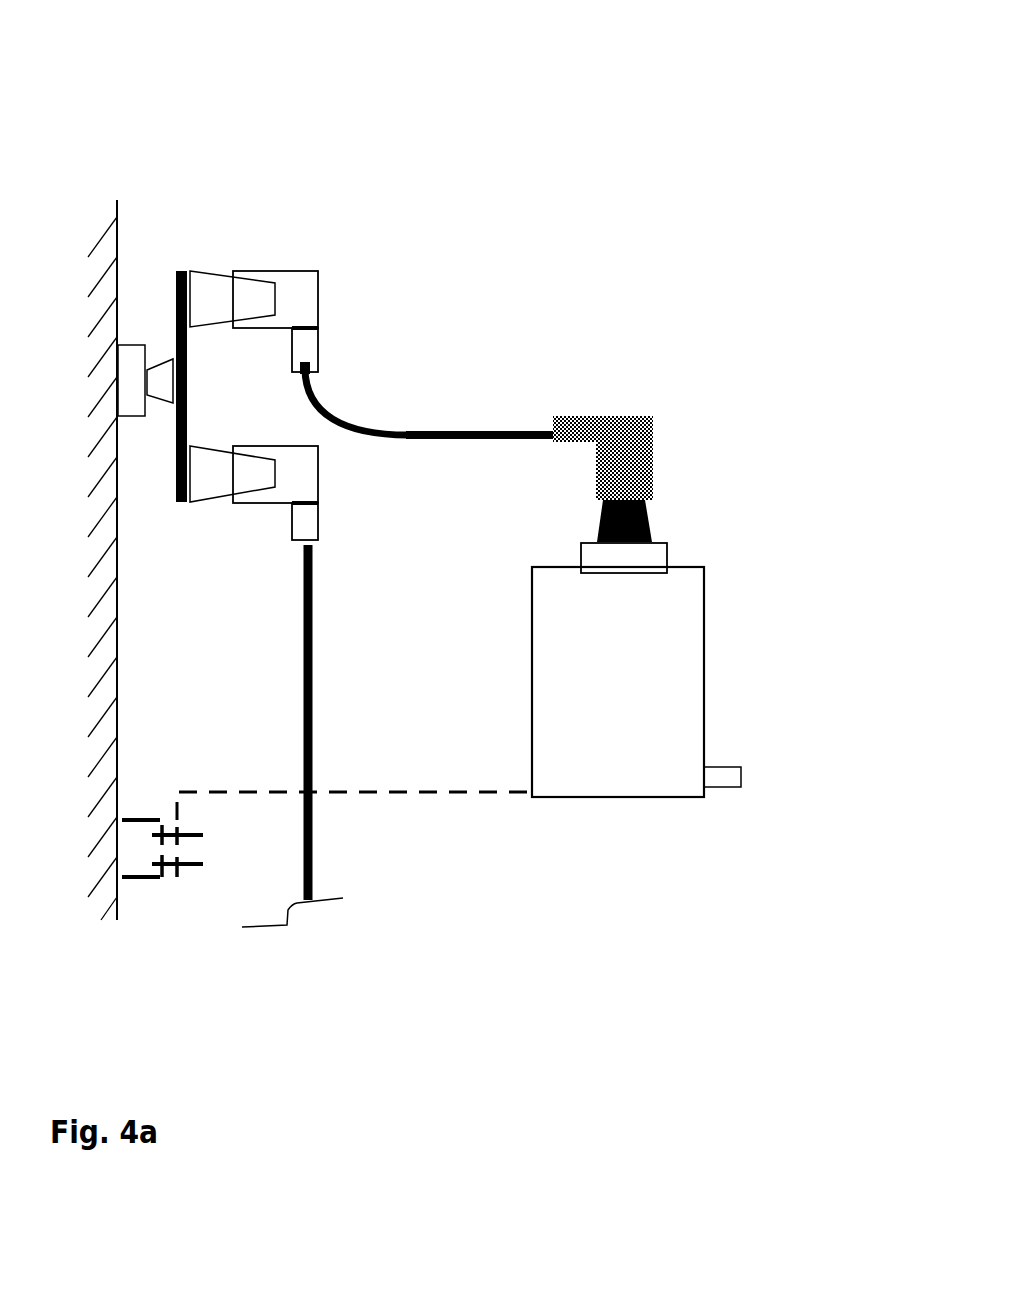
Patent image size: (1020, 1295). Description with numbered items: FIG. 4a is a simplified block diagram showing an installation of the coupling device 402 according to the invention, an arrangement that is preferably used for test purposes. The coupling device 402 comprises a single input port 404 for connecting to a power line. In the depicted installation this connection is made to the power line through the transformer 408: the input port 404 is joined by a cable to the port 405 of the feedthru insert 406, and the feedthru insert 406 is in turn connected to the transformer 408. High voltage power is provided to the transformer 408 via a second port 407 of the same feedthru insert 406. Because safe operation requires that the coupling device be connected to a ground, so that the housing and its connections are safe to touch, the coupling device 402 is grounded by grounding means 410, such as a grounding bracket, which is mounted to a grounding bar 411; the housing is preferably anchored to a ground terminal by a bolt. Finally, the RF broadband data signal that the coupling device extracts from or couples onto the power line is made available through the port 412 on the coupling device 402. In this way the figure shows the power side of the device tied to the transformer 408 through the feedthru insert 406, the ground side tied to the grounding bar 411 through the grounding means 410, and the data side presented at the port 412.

The coupling device 402 is at (635, 690).
The input port 404 is at (635, 463).
The port of feedthru insert 405 is at (323, 308).
The feedthru insert 406 is at (166, 380).
The port 407 is at (305, 467).
The transformer 408 is at (117, 217).
The grounding means 410 is at (446, 795).
The grounding bar 411 is at (150, 848).
The port 412 is at (740, 787).